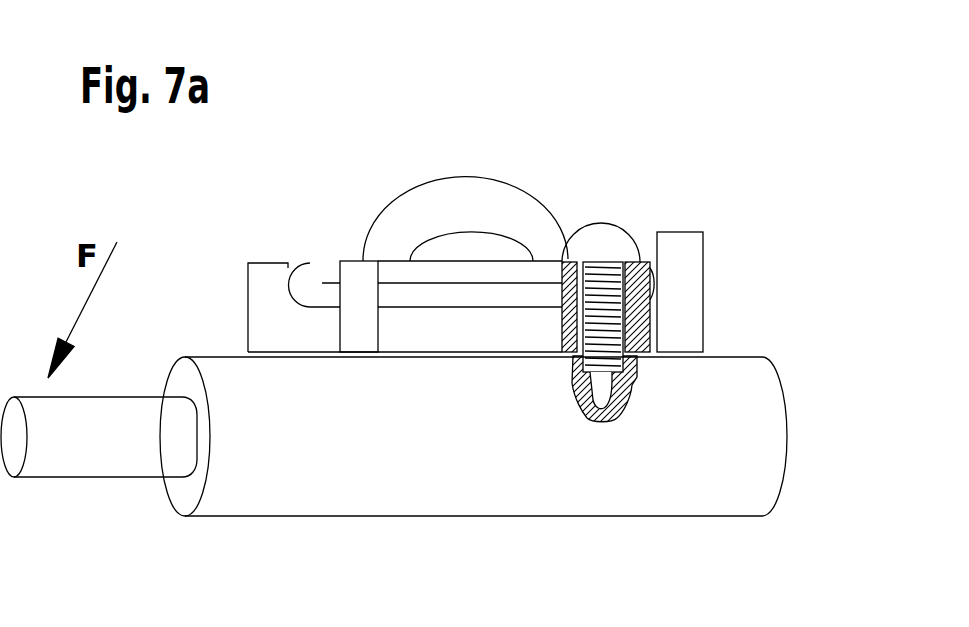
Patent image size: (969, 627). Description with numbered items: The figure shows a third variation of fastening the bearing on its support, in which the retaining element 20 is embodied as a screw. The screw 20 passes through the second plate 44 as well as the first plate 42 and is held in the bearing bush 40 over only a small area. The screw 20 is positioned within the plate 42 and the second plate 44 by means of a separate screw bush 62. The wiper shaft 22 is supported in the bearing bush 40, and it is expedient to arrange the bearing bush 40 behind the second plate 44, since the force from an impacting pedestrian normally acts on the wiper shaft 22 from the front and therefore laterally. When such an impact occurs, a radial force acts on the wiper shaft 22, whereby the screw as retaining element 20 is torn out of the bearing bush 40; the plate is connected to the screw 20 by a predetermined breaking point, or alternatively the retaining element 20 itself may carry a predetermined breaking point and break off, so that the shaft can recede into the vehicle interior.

The retaining element 20 is at (592, 240).
The wiper shaft 22 is at (93, 450).
The bearing bush 40 is at (378, 452).
The plate 42 is at (272, 293).
The second plate 44 is at (323, 270).
The screw bush 62 is at (640, 280).